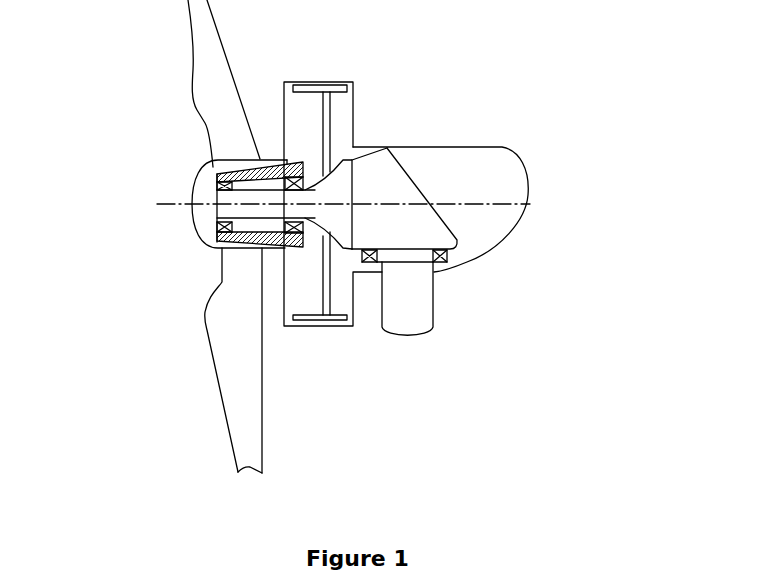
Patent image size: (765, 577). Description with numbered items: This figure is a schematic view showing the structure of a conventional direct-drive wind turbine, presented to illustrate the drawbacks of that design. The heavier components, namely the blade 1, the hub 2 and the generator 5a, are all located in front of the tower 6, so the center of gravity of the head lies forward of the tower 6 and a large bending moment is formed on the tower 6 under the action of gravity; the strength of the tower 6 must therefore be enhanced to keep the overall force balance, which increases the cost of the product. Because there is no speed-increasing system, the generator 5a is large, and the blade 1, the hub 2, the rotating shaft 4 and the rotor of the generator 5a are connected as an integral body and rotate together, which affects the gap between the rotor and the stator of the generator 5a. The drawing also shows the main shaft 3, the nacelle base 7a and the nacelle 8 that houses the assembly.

The blade 1 is at (205, 123).
The hub 2 is at (200, 228).
The main shaft 3 is at (233, 203).
The rotating shaft 4 is at (222, 236).
The generator 5a is at (352, 82).
The tower 6 is at (415, 322).
The nacelle base 7a is at (400, 193).
The nacelle 8 is at (480, 232).